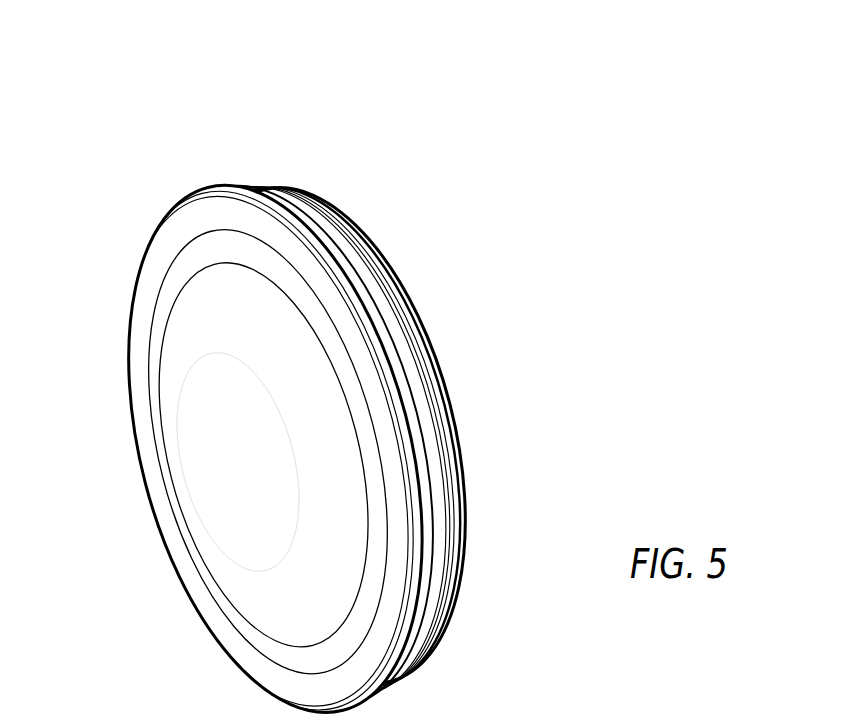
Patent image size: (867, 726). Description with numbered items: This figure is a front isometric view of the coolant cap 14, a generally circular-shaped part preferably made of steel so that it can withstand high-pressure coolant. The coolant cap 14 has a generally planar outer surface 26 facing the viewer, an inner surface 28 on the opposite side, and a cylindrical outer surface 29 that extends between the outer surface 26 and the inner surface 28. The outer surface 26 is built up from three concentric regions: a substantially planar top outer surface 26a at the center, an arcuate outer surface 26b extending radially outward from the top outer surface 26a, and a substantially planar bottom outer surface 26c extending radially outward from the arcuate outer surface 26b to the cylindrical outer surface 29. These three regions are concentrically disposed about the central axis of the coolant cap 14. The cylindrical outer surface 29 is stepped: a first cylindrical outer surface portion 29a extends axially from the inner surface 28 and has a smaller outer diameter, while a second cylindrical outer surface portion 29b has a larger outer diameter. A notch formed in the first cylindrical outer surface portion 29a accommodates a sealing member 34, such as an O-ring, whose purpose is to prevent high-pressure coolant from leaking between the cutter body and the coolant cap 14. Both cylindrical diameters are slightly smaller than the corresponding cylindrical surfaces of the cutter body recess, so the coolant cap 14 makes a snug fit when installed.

The coolant cap 14 is at (296, 394).
The outer surface 26 is at (203, 540).
The top outer surface 26a is at (175, 360).
The arcuate outer surface 26b is at (172, 287).
The bottom outer surface 26c is at (195, 220).
The inner surface 28 is at (447, 362).
The cylindrical outer surface 29 is at (291, 394).
The first cylindrical outer surface portion 29a is at (300, 192).
The second cylindrical outer surface portion 29b is at (232, 185).
The sealing member 34 is at (342, 228).